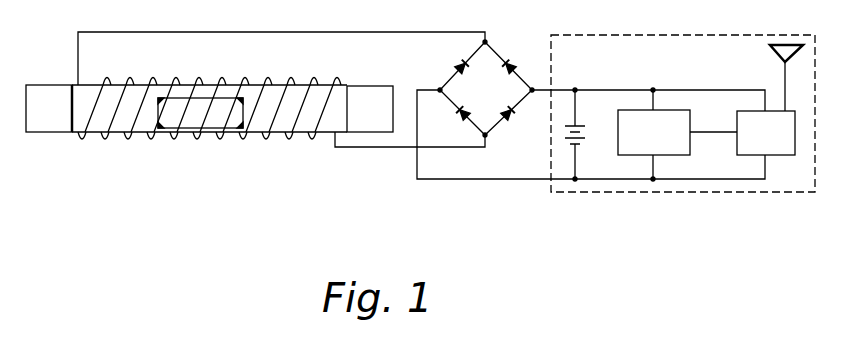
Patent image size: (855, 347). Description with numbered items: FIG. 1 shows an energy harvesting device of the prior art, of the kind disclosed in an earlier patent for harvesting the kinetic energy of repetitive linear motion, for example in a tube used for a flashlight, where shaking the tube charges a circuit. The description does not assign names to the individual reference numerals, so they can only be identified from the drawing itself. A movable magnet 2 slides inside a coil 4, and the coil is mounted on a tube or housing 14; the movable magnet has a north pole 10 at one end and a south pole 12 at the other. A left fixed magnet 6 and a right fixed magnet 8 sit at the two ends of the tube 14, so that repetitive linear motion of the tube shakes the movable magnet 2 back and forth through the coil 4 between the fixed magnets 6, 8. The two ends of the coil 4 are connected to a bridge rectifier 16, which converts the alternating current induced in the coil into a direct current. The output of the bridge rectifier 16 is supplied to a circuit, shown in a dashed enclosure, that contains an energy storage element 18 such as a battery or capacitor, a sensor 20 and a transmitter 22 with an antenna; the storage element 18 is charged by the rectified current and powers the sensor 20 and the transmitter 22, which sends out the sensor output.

The movable magnet 2 is at (202, 106).
The coil 4 is at (113, 80).
The left fixed magnet 6 is at (57, 133).
The right fixed magnet 8 is at (370, 86).
The north pole of movable magnet 10 is at (159, 95).
The south pole of movable magnet 12 is at (245, 95).
The coil housing / tube 14 is at (312, 79).
The bridge rectifier 16 is at (494, 91).
The battery / energy storage 18 is at (590, 122).
The sensor 20 is at (690, 117).
The transmitter 22 is at (737, 155).